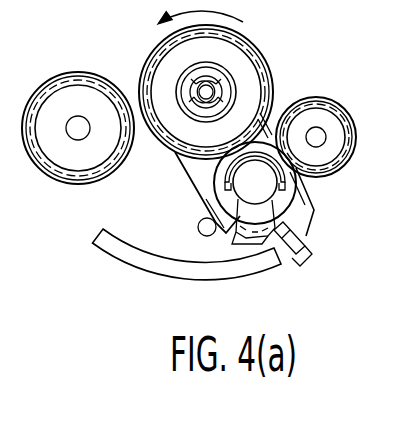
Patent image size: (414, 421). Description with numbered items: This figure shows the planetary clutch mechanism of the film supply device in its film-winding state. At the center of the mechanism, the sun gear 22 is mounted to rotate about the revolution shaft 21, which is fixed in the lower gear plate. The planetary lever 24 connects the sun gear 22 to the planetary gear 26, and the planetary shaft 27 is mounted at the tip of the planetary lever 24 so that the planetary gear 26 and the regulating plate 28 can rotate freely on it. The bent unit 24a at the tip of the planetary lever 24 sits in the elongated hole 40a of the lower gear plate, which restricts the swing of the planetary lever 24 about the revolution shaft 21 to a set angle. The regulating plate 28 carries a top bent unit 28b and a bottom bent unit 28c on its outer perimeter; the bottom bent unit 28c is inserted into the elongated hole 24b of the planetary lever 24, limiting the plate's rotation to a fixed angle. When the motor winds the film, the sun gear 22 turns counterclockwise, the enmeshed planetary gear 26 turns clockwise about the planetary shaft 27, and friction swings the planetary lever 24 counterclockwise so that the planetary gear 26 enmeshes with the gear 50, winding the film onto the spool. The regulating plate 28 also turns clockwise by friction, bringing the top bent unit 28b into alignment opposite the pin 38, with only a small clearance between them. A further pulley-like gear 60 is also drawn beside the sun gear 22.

The revolution shaft 21 is at (206, 90).
The sun gear 22 is at (247, 73).
The planetary lever 24 is at (307, 210).
The bent unit 24a is at (294, 262).
The elongated hole 24b is at (300, 252).
The planetary gear 26 is at (283, 223).
The planetary shaft 27 is at (263, 178).
The regulating plate 28 is at (240, 212).
The top bent unit 28b is at (213, 210).
The bottom bent unit 28c is at (242, 232).
The pin 38 is at (197, 226).
The elongated hole 40a is at (133, 264).
The gear 50 is at (333, 117).
The pulley 60 is at (73, 88).